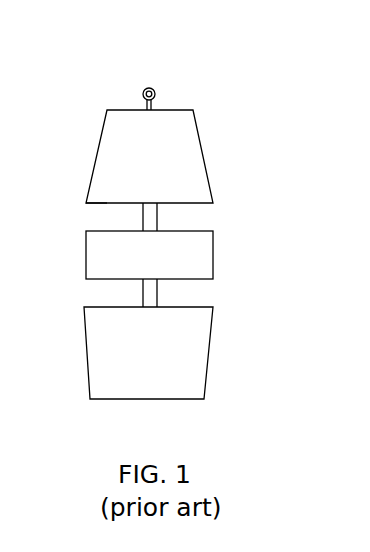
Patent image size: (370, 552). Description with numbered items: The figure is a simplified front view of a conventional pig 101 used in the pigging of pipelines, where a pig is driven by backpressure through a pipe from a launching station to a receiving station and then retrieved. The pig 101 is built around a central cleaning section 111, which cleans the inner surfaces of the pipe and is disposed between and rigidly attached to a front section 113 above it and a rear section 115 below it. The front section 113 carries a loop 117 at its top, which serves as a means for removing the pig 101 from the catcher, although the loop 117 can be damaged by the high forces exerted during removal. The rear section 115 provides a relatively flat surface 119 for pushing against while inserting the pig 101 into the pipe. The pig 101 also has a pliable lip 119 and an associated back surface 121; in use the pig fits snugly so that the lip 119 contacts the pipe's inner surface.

The pig 101 is at (278, 50).
The cleaning section 111 is at (213, 260).
The front section 113 is at (203, 156).
The rear section 115 is at (208, 362).
The loop 117 is at (144, 89).
The pliable lip 119 is at (80, 195).
The back surface 121 is at (94, 207).